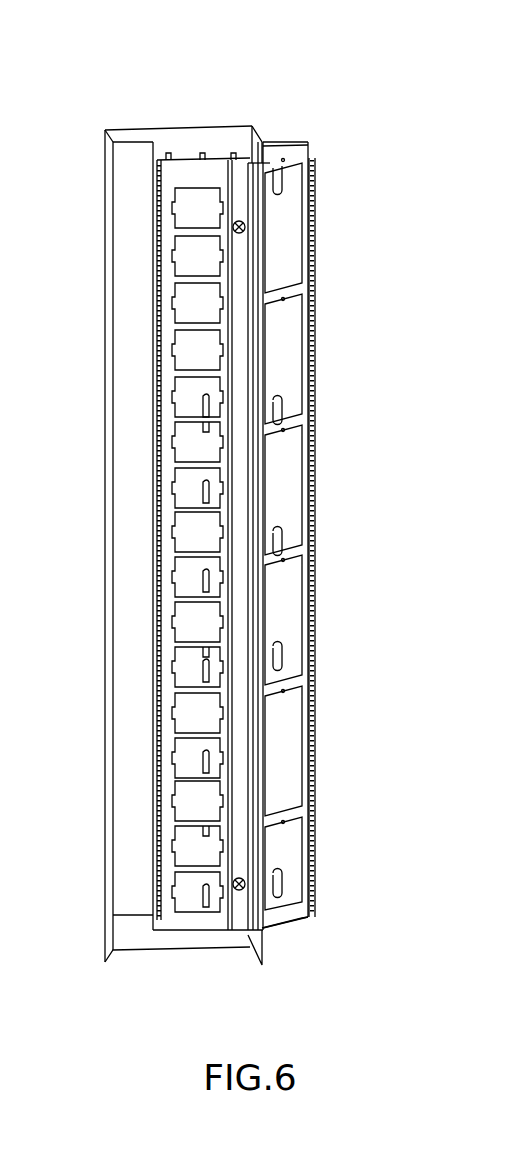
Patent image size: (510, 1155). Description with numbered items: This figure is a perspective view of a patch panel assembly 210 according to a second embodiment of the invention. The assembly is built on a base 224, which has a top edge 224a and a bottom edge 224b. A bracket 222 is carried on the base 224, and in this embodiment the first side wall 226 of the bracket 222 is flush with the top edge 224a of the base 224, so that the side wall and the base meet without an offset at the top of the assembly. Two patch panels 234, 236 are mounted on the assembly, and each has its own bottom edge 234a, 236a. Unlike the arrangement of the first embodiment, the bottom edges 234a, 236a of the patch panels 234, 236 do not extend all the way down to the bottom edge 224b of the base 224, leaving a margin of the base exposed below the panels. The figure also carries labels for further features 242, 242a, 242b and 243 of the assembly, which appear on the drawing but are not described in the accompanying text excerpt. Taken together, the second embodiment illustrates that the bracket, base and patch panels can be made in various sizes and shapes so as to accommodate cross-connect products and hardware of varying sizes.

The patch panel assembly 210 is at (166, 114).
The bracket 222 is at (198, 116).
The base 224 is at (222, 127).
The top edge of base 224a is at (102, 128).
The bottom edge of base 224b is at (130, 960).
The first side wall 226 is at (102, 148).
The patch panel 234 is at (173, 896).
The bottom edge of patch panel 234a is at (178, 933).
The patch panel 236 is at (313, 803).
The bottom edge of patch panel 236a is at (300, 920).
The bracket 242 is at (286, 143).
The bracket top edge 242a is at (284, 136).
The bracket channel 242b is at (262, 158).
The hatched strip 243 is at (312, 142).